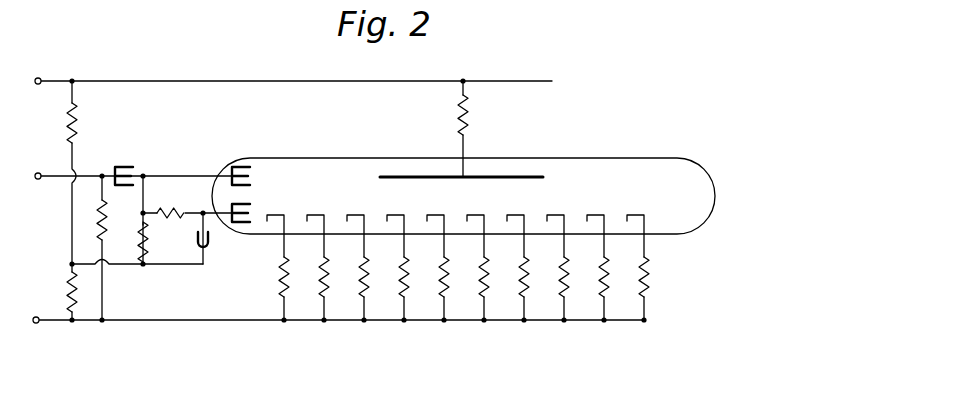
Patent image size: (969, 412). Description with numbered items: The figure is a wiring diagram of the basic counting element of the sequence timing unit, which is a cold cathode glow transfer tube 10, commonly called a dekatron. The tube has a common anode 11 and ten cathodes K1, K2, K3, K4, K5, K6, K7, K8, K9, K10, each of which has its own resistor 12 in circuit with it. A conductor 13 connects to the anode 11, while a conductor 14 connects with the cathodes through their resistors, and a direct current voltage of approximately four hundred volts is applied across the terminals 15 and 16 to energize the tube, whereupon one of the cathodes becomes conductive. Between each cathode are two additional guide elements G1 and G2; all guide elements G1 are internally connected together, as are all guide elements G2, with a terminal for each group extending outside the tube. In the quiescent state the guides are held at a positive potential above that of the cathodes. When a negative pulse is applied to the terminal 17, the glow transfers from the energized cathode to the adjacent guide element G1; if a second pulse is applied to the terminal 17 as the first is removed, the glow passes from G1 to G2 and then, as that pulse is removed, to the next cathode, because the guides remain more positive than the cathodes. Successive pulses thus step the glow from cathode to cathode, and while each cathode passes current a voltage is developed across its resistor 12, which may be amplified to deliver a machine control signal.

The cold cathode type glow transfer tube 10 is at (459, 172).
The common anode 11 is at (507, 175).
The resistor 12 is at (435, 278).
The conductor 13 is at (236, 79).
The conductor 14 is at (205, 322).
The terminal 15 is at (40, 77).
The terminal 16 is at (36, 325).
The terminal 17 is at (52, 179).
The guide element G1 is at (216, 238).
The guide element G2 is at (227, 167).
The cathode K1 is at (595, 227).
The cathode K2 is at (555, 227).
The cathode K3 is at (515, 227).
The cathode K4 is at (475, 227).
The cathode K5 is at (435, 227).
The cathode K6 is at (395, 227).
The cathode K7 is at (355, 227).
The cathode K8 is at (315, 227).
The cathode K9 is at (275, 227).
The cathode K10 is at (636, 227).